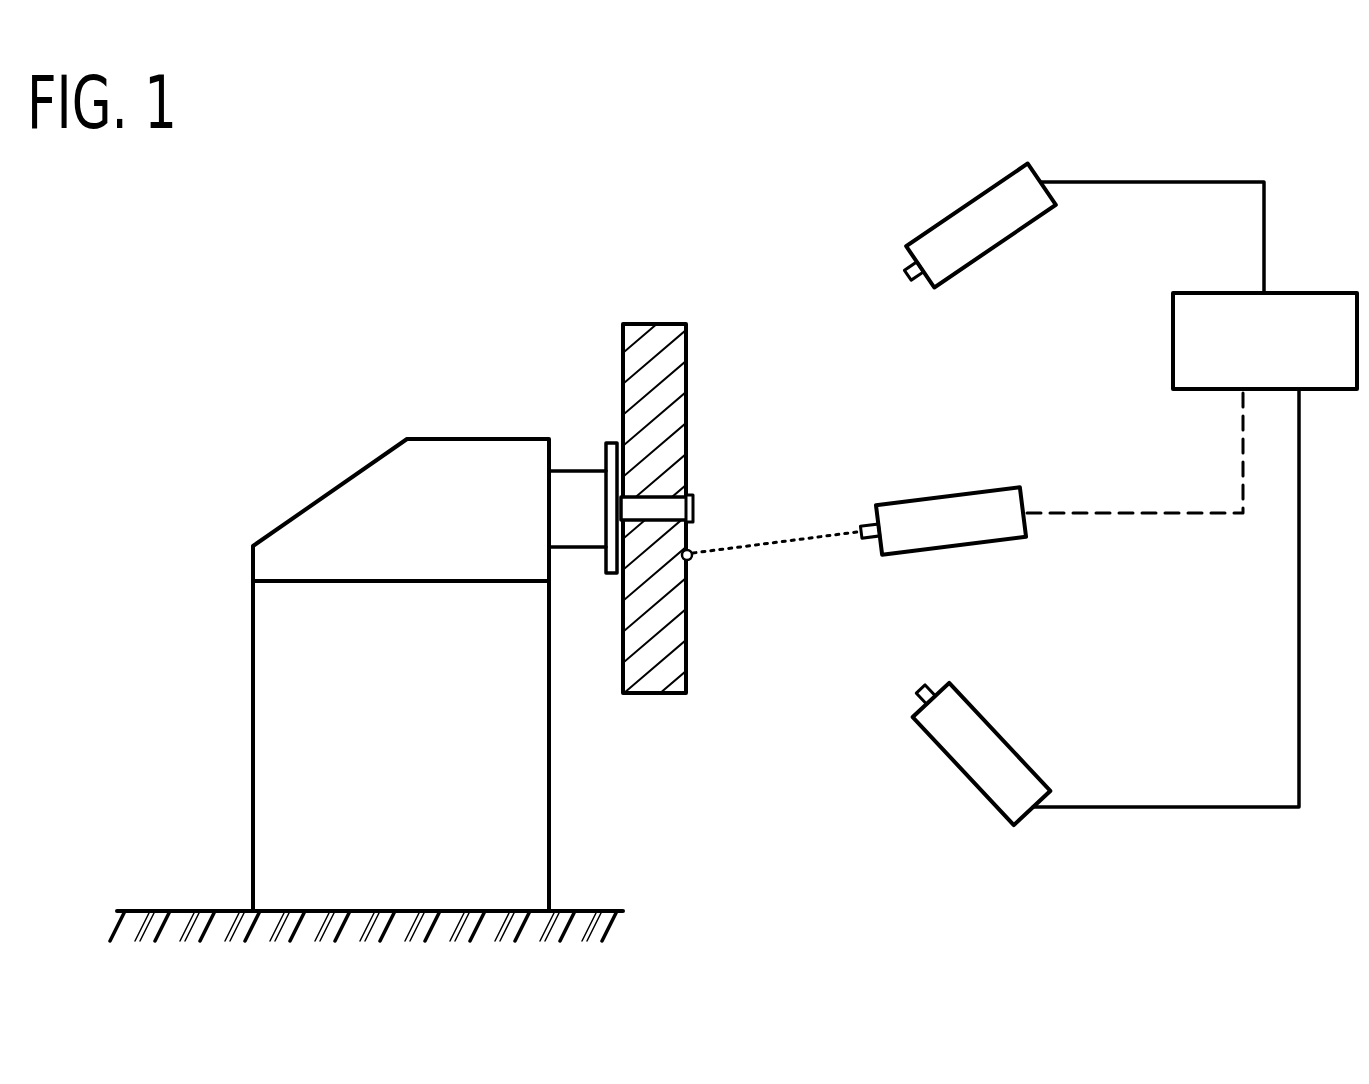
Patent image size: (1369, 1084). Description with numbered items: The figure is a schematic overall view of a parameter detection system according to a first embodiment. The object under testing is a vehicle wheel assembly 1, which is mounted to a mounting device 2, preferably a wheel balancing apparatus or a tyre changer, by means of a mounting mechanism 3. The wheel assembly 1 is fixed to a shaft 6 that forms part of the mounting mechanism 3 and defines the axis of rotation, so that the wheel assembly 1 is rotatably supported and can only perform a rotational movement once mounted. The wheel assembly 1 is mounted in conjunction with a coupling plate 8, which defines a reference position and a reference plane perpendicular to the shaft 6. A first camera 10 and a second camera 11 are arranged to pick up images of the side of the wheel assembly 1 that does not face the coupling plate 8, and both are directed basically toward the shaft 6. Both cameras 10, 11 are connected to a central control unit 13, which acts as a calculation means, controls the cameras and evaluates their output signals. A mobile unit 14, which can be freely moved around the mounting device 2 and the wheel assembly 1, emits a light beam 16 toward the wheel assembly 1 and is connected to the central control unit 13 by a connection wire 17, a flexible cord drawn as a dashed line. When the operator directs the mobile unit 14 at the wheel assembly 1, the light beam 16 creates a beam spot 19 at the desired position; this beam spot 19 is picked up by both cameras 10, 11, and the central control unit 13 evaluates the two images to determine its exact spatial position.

The vehicle wheel assembly 1 is at (701, 384).
The mounting device 2 is at (304, 444).
The mounting mechanism 3 is at (564, 446).
The shaft 6 is at (668, 503).
The coupling plate 8 is at (614, 442).
The first camera 10 is at (1037, 240).
The second camera 11 is at (1049, 630).
The central control unit 13 is at (1340, 390).
The mobile unit 14 is at (914, 475).
The light beam 16 is at (841, 528).
The connection wire 17 is at (1118, 513).
The beam spot 19 is at (690, 562).